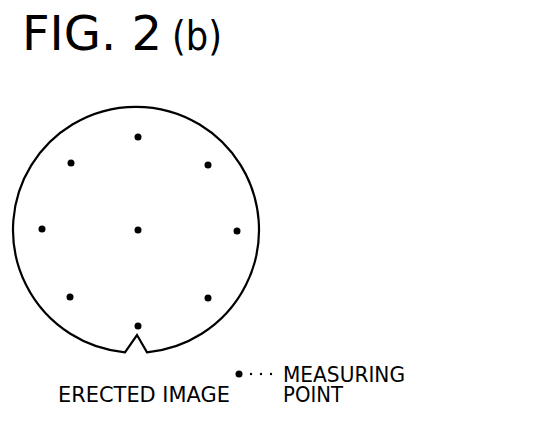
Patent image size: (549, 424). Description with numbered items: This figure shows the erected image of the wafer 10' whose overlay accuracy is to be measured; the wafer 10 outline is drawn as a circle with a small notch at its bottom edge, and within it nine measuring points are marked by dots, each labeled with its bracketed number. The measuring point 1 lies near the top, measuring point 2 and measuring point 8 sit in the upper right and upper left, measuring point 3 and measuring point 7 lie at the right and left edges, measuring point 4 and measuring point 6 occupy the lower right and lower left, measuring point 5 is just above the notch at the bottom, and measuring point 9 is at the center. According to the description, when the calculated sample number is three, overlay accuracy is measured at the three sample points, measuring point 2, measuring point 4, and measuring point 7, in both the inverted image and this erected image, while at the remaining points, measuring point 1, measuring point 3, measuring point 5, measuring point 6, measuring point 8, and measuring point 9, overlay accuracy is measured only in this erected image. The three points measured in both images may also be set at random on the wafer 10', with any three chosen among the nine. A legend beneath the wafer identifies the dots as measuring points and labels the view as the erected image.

The wafer to be measured 10' is at (138, 221).
The erected image (field of view) 10 is at (138, 221).
The measuring point 1 is at (147, 151).
The measuring point 2 is at (224, 178).
The measuring point 3 is at (241, 245).
The measuring point 4 is at (206, 312).
The measuring point 5 is at (157, 336).
The measuring point 6 is at (75, 311).
The measuring point 7 is at (45, 243).
The measuring point 8 is at (71, 177).
The measuring point 9 is at (138, 243).